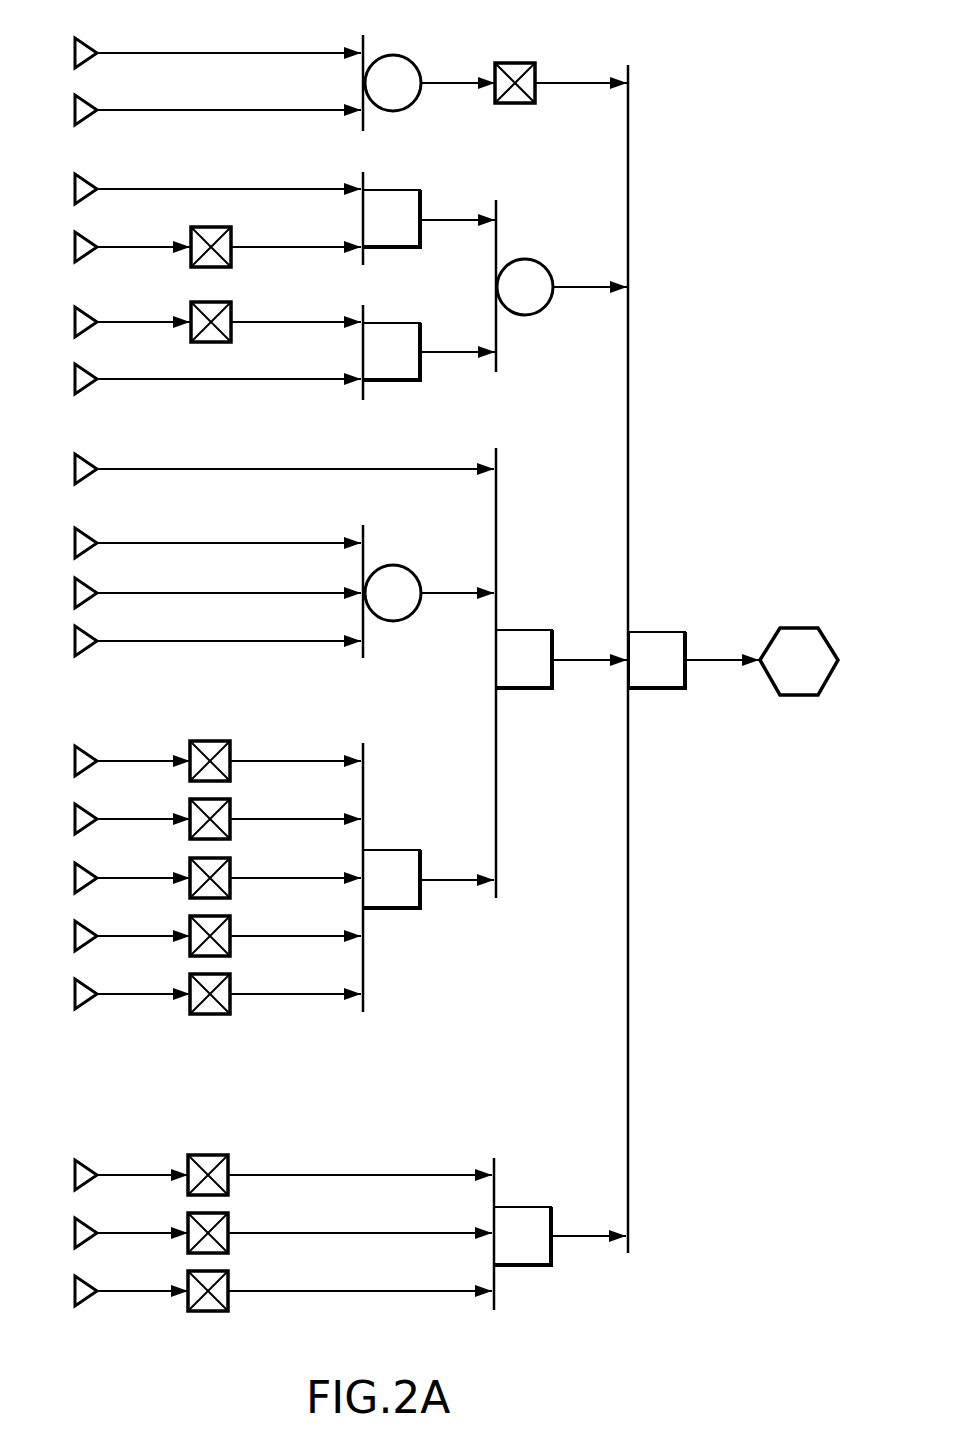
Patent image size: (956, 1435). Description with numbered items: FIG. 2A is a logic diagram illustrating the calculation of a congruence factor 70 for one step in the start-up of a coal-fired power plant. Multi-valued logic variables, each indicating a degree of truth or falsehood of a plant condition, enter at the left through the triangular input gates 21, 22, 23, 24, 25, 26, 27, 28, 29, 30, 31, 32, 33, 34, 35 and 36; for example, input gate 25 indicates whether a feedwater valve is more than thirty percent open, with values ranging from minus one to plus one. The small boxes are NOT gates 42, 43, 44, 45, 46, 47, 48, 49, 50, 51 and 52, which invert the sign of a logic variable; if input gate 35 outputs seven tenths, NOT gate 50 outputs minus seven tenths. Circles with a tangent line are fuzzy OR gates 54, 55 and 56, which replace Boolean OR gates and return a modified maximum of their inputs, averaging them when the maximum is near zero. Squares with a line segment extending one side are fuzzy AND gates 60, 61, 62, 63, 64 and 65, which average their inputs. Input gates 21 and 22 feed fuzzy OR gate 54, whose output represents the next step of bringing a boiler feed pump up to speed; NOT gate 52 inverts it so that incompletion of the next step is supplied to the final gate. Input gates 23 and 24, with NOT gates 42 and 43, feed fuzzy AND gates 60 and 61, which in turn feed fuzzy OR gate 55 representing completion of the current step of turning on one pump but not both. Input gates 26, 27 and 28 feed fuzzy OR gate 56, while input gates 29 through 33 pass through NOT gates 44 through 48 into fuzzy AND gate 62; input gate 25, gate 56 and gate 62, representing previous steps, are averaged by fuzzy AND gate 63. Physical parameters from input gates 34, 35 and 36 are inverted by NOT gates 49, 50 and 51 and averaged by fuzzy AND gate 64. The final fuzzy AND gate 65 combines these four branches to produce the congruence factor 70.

The input gate 21 is at (218, 44).
The input gate 22 is at (218, 101).
The input gate 23 is at (218, 247).
The input gate 24 is at (218, 304).
The input gate 25 is at (284, 460).
The input gate 26 is at (218, 534).
The input gate 27 is at (218, 584).
The input gate 28 is at (218, 632).
The input gate 29 is at (132, 752).
The input gate 30 is at (132, 810).
The input gate 31 is at (132, 869).
The input gate 32 is at (132, 927).
The input gate 33 is at (132, 985).
The input gate 34 is at (131, 1166).
The input gate 35 is at (131, 1224).
The input gate 36 is at (131, 1282).
The NOT gate 42 is at (231, 232).
The NOT gate 43 is at (231, 312).
The NOT gate 44 is at (228, 742).
The NOT gate 45 is at (230, 810).
The NOT gate 46 is at (230, 866).
The NOT gate 47 is at (230, 925).
The NOT gate 48 is at (230, 982).
The NOT gate 49 is at (228, 1157).
The NOT gate 50 is at (228, 1214).
The NOT gate 51 is at (228, 1271).
The NOT gate 52 is at (530, 64).
The fuzzy OR gate 54 is at (386, 57).
The fuzzy OR gate 55 is at (525, 260).
The fuzzy OR gate 56 is at (389, 565).
The fuzzy AND gate 60 is at (408, 190).
The fuzzy AND gate 61 is at (402, 323).
The fuzzy AND gate 62 is at (382, 850).
The fuzzy AND gate 63 is at (522, 630).
The fuzzy AND gate 64 is at (526, 1207).
The fuzzy AND gate 65 is at (663, 632).
The congruence factor 70 is at (810, 628).